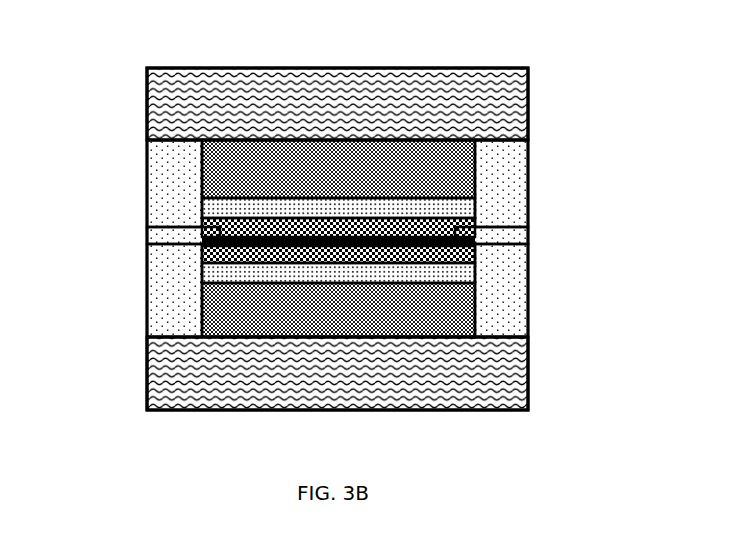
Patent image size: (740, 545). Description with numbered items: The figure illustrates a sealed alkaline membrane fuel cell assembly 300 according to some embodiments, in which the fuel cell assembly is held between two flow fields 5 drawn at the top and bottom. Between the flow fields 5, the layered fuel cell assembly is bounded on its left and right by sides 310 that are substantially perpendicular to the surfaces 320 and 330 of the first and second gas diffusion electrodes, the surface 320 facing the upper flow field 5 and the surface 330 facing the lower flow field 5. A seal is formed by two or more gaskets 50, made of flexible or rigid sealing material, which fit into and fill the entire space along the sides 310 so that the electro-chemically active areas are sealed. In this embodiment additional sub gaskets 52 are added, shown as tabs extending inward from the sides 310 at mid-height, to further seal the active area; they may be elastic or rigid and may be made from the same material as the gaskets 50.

The thermoelectric device assembly 300 is at (108, 68).
The flow field 5 is at (518, 92).
The sides 310 is at (197, 199).
The gasket 50 is at (163, 282).
The sub gasket 52 is at (170, 230).
The surface of first gas diffusion electrode 320 is at (250, 136).
The surface of second gas diffusion electrode 330 is at (315, 340).